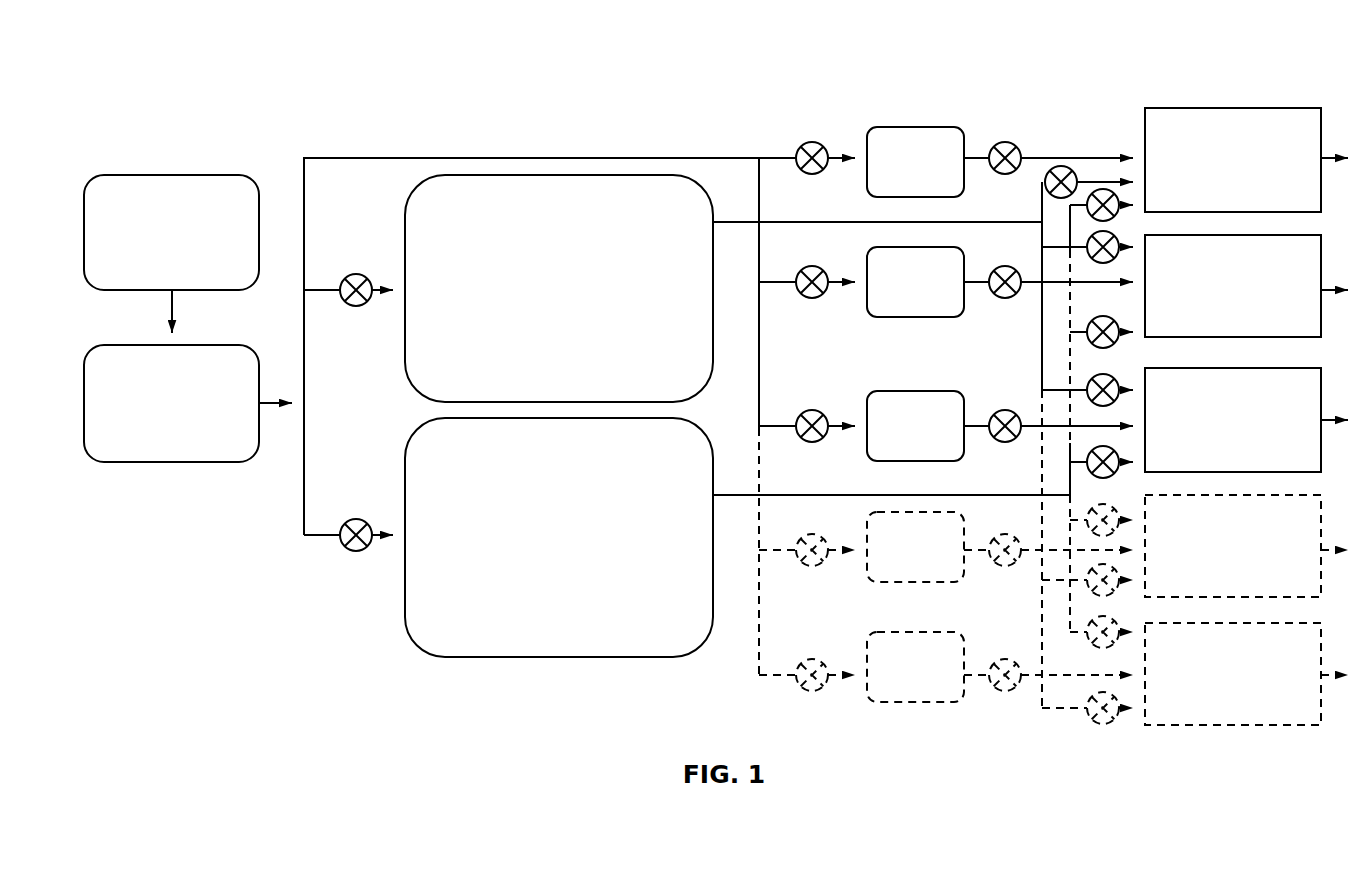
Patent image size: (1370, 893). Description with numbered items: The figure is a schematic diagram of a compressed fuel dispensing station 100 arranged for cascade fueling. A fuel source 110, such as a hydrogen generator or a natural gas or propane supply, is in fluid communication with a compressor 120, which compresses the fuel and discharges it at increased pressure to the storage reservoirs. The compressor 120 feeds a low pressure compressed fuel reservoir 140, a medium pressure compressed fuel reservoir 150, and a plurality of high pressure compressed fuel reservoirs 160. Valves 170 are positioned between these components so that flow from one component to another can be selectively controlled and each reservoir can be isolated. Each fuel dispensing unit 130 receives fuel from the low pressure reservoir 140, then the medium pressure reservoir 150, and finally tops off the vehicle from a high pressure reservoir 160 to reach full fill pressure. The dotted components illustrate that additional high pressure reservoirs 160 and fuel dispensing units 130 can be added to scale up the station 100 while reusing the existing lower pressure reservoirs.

The compressed fuel dispensing station 100 is at (226, 91).
The fuel source 110 is at (171, 232).
The compressor 120 is at (171, 403).
The fuel dispensing unit 130 is at (1233, 290).
The low pressure compressed fuel reservoir 140 is at (559, 537).
The medium pressure compressed fuel reservoir 150 is at (559, 288).
The high pressure compressed fuel reservoir 160 is at (915, 294).
The valve 170 is at (996, 118).